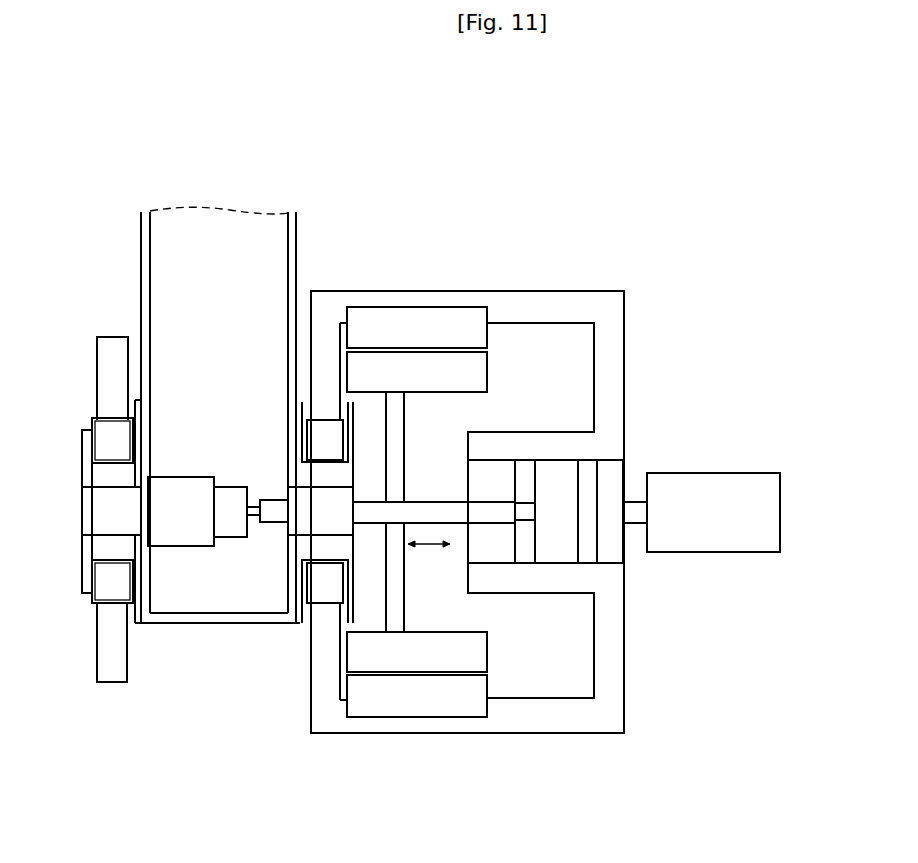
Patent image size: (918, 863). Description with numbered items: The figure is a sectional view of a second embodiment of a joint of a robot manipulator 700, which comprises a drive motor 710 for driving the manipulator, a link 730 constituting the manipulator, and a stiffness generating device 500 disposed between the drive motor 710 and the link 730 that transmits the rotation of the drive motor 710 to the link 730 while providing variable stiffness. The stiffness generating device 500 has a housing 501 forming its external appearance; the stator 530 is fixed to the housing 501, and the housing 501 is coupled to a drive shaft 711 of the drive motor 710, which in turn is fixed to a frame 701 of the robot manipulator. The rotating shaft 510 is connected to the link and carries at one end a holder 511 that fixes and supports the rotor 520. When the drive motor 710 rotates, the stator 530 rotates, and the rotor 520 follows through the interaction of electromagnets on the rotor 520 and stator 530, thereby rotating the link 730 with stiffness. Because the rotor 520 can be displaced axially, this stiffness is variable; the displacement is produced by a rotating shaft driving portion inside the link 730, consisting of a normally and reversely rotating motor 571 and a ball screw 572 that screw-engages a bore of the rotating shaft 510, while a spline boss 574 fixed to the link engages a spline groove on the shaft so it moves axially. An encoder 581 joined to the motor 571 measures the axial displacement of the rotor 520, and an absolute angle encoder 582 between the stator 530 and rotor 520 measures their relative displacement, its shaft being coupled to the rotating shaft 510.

The stiffness generating device 500 is at (620, 266).
The housing 501 is at (525, 291).
The rotating shaft 510 is at (368, 522).
The holder 511 is at (420, 413).
The rotor 520 is at (470, 353).
The stator 530 is at (418, 308).
The motor 571 is at (176, 550).
The ball screw 572 is at (254, 518).
The spline boss 574 is at (284, 525).
The encoder 581 is at (223, 540).
The absolute angle encoder 582 is at (548, 568).
The joint of a robot manipulator 700 is at (185, 128).
The frame 701 is at (96, 641).
The drive motor 710 is at (747, 471).
The drive shaft 711 is at (634, 527).
The link 730 is at (140, 262).